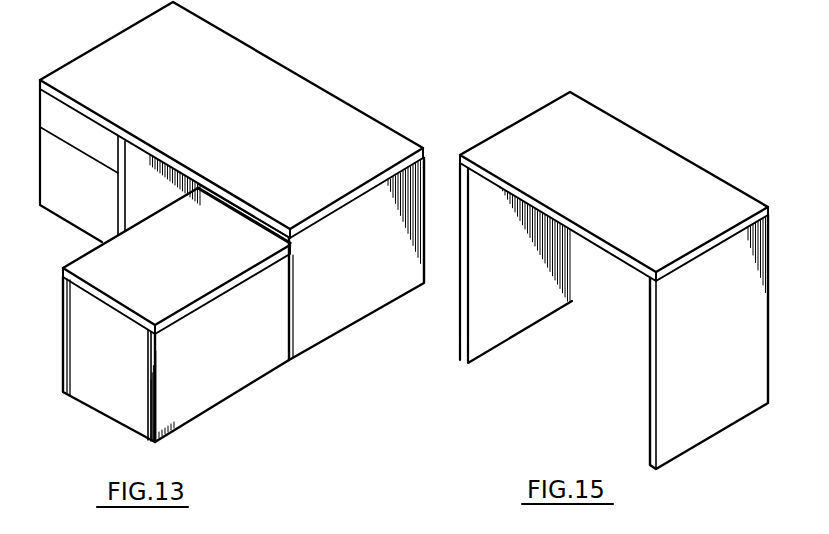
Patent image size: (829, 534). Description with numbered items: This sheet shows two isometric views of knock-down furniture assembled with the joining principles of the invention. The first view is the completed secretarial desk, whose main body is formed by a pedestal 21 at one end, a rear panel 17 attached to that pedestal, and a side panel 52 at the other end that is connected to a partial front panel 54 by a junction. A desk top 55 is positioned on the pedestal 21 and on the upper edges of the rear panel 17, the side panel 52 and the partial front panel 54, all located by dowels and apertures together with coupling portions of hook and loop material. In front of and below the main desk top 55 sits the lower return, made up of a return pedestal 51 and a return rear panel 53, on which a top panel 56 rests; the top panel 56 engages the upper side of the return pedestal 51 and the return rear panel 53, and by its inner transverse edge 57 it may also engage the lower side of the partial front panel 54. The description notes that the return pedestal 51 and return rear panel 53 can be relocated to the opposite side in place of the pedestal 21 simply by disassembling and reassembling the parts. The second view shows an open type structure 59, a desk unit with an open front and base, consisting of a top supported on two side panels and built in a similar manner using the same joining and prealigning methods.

In FIG. 13, the desk top 55 is at (213, 42).
In FIG. 13, the rear panel 17 is at (426, 166).
In FIG. 13, the pedestal 21 is at (75, 193).
In FIG. 13, the side panel 52 is at (388, 270).
In FIG. 13, the partial front panel 54 is at (223, 200).
In FIG. 13, the inner transverse edge 57 is at (252, 224).
In FIG. 13, the top panel 56 is at (204, 283).
In FIG. 13, the return pedestal 51 is at (95, 377).
In FIG. 13, the return rear panel 53 is at (227, 392).
In FIG. 15, the open type structure 59 is at (645, 397).